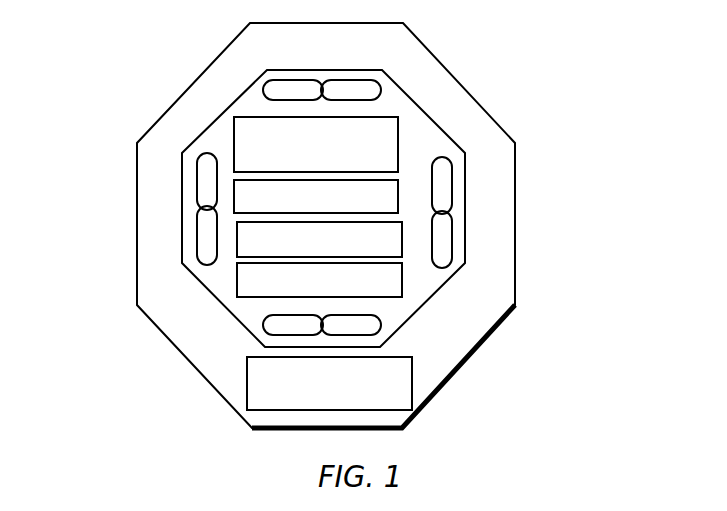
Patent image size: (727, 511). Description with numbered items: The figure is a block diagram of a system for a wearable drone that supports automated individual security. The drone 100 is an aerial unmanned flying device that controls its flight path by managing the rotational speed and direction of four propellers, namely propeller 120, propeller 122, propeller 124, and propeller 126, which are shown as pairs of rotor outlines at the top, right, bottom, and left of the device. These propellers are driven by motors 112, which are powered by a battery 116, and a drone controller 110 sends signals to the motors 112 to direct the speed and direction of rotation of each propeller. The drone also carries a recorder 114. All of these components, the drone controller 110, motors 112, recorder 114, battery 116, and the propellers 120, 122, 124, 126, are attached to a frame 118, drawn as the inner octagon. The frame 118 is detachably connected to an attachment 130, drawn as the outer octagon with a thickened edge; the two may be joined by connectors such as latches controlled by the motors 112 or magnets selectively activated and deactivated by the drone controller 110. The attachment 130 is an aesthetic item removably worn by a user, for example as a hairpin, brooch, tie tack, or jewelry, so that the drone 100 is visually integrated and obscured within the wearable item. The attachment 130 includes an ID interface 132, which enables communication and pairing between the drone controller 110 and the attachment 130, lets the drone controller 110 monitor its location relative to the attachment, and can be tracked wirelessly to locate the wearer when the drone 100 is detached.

The drone 100 is at (220, 112).
The drone controller 110 is at (329, 178).
The motors 112 is at (373, 209).
The recorder 114 is at (387, 249).
The battery 116 is at (377, 290).
The frame 118 is at (417, 127).
The propeller 120 is at (282, 82).
The propeller 122 is at (442, 190).
The propeller 124 is at (337, 331).
The propeller 126 is at (203, 182).
The attachment 130 is at (448, 347).
The ID interface 132 is at (343, 406).